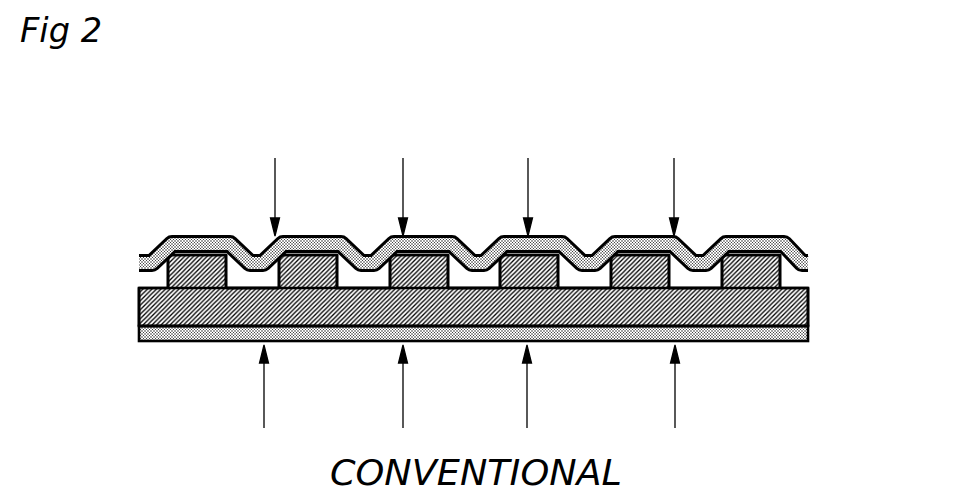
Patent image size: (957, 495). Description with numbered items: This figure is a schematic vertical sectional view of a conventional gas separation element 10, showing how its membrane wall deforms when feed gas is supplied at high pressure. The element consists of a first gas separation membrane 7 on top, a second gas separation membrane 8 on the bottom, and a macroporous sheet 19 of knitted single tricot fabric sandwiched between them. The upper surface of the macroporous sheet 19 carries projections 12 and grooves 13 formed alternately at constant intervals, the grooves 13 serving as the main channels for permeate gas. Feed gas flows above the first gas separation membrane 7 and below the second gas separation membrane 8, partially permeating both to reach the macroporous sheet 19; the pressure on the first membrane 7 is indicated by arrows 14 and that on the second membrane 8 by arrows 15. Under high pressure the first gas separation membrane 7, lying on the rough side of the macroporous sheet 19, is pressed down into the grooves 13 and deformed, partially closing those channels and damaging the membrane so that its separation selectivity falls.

The first gas separation membrane 7 is at (748, 237).
The second gas separation membrane 8 is at (757, 345).
The gas separation element 10 is at (797, 315).
The projections 12 is at (307, 270).
The grooves 13 is at (583, 288).
The arrows 14 is at (403, 190).
The arrows 15 is at (402, 383).
The macroporous sheet 19 is at (188, 310).